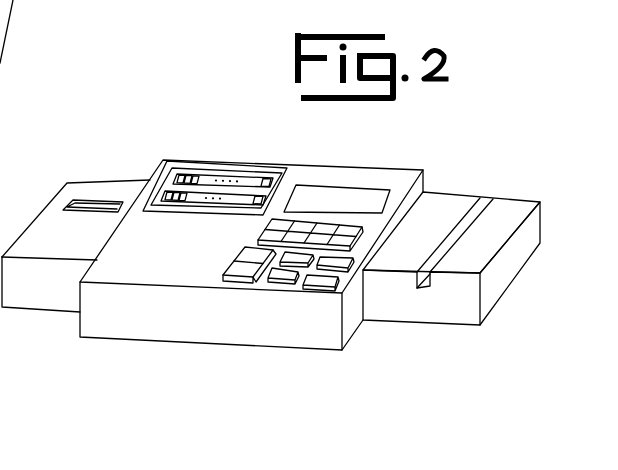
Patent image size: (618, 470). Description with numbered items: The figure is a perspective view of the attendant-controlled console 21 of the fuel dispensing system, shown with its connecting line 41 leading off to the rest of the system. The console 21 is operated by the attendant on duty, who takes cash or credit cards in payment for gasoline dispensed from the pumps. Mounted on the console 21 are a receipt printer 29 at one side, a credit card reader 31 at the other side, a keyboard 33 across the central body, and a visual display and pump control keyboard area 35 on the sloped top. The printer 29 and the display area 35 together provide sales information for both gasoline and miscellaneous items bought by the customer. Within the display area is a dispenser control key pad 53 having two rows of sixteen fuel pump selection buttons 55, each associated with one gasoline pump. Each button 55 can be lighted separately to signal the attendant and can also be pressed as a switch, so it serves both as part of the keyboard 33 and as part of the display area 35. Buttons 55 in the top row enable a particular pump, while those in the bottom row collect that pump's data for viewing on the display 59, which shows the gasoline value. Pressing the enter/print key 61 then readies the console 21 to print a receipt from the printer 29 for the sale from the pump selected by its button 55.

The console 21 is at (323, 157).
The receipt printer 29 is at (48, 198).
The credit card reader 31 is at (495, 288).
The keyboard 33 is at (200, 272).
The visual display and pump control keyboard area 35 is at (165, 188).
The connecting cable 41 is at (0, 127).
The dispenser control key pad 53 is at (163, 182).
The fuel pump selection buttons 55 is at (207, 181).
The display 59 is at (347, 193).
The enter/print key 61 is at (300, 258).